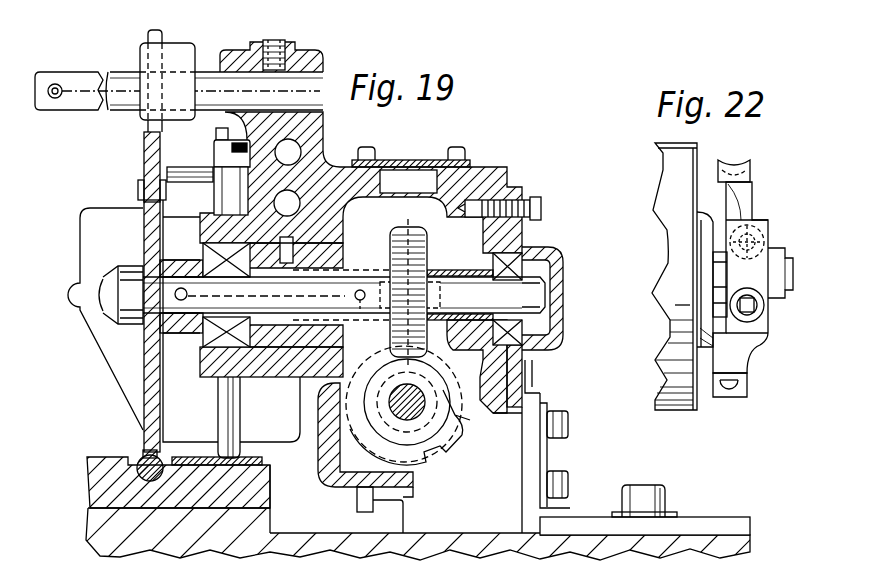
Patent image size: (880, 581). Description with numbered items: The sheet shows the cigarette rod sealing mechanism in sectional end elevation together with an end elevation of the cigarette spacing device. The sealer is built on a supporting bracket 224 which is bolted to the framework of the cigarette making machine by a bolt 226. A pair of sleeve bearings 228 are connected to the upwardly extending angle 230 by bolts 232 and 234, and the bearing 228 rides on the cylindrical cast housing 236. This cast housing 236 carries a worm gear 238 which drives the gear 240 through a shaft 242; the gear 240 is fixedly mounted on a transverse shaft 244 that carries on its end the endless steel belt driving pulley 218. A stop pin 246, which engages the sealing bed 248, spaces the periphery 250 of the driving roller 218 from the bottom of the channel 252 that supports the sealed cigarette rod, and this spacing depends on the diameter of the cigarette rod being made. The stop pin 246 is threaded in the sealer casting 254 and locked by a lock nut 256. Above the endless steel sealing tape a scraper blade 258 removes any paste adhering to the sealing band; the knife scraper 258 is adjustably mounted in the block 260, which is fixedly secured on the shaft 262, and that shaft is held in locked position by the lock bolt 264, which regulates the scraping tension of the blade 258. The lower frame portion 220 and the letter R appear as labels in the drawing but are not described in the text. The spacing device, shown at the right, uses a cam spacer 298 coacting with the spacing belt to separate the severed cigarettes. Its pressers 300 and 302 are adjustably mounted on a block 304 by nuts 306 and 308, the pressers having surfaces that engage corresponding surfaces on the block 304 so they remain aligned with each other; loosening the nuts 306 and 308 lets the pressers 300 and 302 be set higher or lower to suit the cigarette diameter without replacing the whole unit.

In FIG. 19, the endless steel belt driving pulley 218 is at (143, 385).
In FIG. 19, the frame lower portion 220 is at (145, 455).
In FIG. 19, the supporting bracket 224 is at (712, 525).
In FIG. 19, the bolt 226 is at (650, 495).
In FIG. 19, the sleeve bearings 228 is at (323, 463).
In FIG. 19, the upwardly extending angle 230 is at (530, 485).
In FIG. 19, the bolt 232 is at (557, 418).
In FIG. 19, the bolt 234 is at (565, 478).
In FIG. 19, the cylindrical cast housing 236 is at (390, 457).
In FIG. 19, the worm gear 238 is at (442, 390).
In FIG. 19, the gear 240 is at (408, 228).
In FIG. 19, the shaft 242 is at (452, 443).
In FIG. 19, the transverse shaft 244 is at (223, 290).
In FIG. 19, the stop pin 246 is at (230, 447).
In FIG. 19, the sealing bed 248 is at (335, 470).
In FIG. 19, the periphery 250 is at (145, 448).
In FIG. 19, the channel 252 is at (100, 470).
In FIG. 19, the sealer casting 254 is at (315, 140).
In FIG. 19, the lock nut 256 is at (230, 157).
In FIG. 19, the scraper blade 258 is at (155, 33).
In FIG. 19, the block 260 is at (182, 48).
In FIG. 19, the shaft 262 is at (270, 88).
In FIG. 19, the lock bolt 264 is at (270, 40).
In FIG. 19, the radius R is at (85, 467).
In FIG. 22, the cam spacer 298 is at (779, 215).
In FIG. 22, the presser 300 is at (750, 170).
In FIG. 22, the presser 302 is at (747, 389).
In FIG. 22, the block 304 is at (765, 337).
In FIG. 22, the nut 306 is at (765, 312).
In FIG. 22, the nut 308 is at (760, 246).